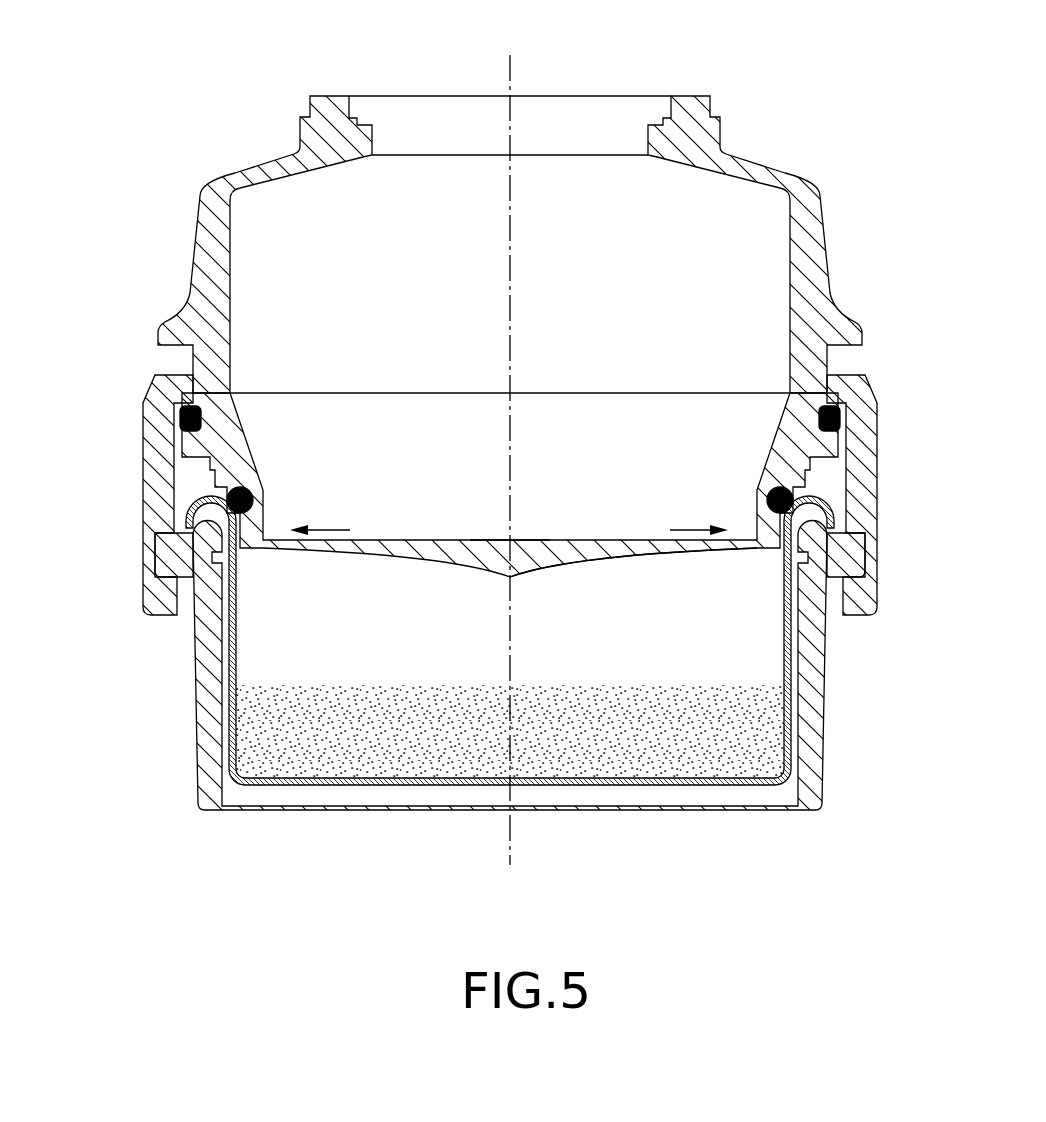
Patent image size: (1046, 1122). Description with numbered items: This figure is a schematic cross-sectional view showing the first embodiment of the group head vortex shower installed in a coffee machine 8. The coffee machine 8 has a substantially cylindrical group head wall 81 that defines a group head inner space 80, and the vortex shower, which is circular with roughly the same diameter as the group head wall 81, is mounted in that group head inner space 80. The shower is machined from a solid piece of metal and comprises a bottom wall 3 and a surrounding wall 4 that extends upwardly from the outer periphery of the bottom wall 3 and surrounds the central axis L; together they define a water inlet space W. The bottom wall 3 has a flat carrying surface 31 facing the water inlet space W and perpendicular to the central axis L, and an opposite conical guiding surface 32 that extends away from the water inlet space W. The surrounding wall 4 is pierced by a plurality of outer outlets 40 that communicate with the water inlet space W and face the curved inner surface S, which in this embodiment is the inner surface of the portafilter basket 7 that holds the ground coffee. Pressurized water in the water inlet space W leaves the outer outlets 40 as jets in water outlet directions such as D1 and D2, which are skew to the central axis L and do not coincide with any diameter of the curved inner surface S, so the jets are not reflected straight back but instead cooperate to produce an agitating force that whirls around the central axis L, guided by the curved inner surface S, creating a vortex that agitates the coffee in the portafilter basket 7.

The coffee machine 8 is at (165, 250).
The group head inner space 80 is at (745, 298).
The group head wall 81 is at (872, 462).
The surrounding wall 4 is at (200, 438).
The outer outlets 40 is at (266, 531).
The bottom wall 3 is at (307, 545).
The carrying surface 31 is at (545, 540).
The guiding surface 32 is at (632, 558).
The portafilter basket 7 is at (257, 786).
The curved inner surface S is at (760, 592).
The water inlet space W is at (427, 410).
The water outlet direction D1 is at (676, 519).
The water outlet direction D2 is at (346, 519).
The central axis L is at (506, 439).